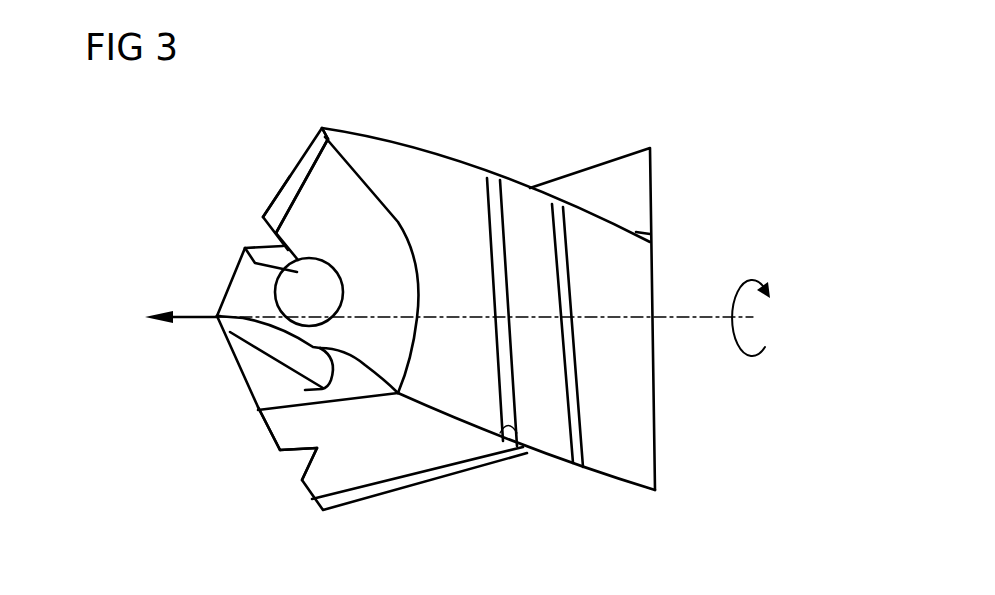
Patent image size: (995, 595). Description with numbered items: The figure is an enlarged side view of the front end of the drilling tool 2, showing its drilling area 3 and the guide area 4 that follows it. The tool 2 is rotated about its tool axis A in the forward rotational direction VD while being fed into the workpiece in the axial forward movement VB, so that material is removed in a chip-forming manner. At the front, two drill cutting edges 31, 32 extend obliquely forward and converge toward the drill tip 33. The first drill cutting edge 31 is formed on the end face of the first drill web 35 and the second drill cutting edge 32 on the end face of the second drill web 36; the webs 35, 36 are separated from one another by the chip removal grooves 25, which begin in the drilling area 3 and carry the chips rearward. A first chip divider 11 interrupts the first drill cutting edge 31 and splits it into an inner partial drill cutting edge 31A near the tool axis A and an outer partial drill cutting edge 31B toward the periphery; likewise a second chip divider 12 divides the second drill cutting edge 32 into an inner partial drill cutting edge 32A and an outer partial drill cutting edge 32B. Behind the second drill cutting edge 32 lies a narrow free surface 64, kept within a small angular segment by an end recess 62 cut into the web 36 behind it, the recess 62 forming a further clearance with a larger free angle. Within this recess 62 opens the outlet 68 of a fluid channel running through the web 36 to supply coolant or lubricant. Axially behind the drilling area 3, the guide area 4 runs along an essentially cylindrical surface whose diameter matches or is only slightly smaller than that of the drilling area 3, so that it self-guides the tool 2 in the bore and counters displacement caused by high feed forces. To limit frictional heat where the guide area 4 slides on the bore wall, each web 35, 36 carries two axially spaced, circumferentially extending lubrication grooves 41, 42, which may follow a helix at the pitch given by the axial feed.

The drilling tool 2 is at (535, 128).
The drilling area 3 is at (172, 366).
The guide area 4 is at (542, 457).
The first chip divider 11 is at (308, 455).
The second chip divider 12 is at (262, 236).
The chip removal grooves 25 is at (437, 430).
The first drill cutting edge 31 is at (260, 433).
The inner partial drill cutting edge 31A is at (301, 486).
The outer partial drill cutting edge 31B is at (277, 440).
The second drill cutting edge 32 is at (295, 162).
The inner partial drill cutting edge 32A is at (282, 188).
The outer partial drill cutting edge 32B is at (230, 278).
The drill tip 33 is at (220, 328).
The first drill web 35 is at (340, 473).
The second drill web 36 is at (447, 222).
The lubrication groove 41 is at (500, 420).
The lubrication groove 42 is at (577, 450).
The end recess 62 is at (327, 190).
The free surface 64 is at (312, 148).
The outlet 68 is at (310, 290).
The tool axis A is at (683, 315).
The axial forward movement VB is at (183, 322).
The forward rotational direction VD is at (765, 285).